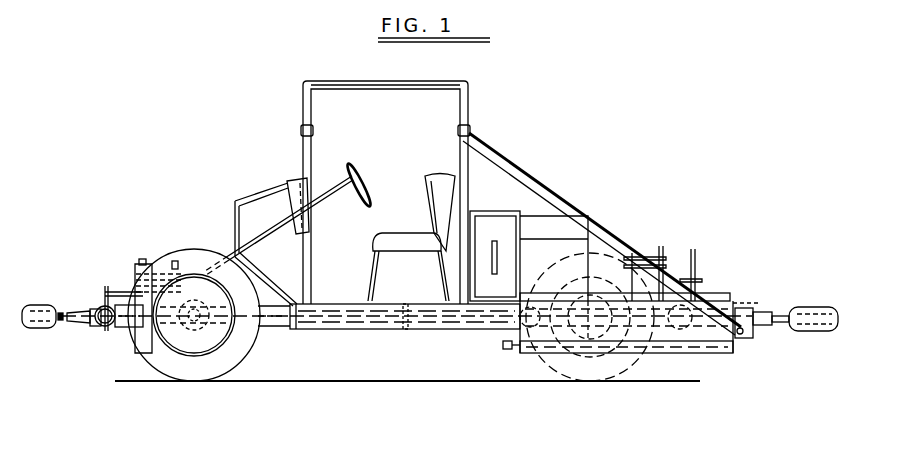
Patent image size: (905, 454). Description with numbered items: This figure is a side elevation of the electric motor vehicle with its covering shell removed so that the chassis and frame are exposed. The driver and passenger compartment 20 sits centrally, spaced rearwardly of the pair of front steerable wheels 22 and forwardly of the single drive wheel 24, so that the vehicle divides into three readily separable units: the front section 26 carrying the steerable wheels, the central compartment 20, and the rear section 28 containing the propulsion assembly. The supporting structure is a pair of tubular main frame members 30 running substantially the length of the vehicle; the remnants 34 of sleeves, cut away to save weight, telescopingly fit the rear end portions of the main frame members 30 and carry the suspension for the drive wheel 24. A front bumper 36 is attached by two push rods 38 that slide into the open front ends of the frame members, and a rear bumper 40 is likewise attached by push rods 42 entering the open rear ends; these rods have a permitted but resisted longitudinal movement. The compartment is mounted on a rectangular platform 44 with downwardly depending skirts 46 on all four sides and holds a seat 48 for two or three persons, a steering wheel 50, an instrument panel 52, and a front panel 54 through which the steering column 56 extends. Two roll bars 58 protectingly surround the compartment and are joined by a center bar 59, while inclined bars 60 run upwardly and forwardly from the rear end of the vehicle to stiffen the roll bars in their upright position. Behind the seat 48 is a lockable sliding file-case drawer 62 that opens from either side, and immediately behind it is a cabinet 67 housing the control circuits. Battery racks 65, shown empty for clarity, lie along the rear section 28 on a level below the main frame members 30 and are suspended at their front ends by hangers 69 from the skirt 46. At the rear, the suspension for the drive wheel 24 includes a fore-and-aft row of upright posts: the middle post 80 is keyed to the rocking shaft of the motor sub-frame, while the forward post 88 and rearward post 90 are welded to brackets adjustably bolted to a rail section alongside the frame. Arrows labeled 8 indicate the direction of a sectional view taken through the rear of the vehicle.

The direction arrow 8 is at (510, 298).
The driver and passenger compartment 20 is at (356, 78).
The front steerable wheels 22 is at (194, 370).
The drive wheel 24 is at (600, 368).
The front section 26 is at (159, 250).
The rear section 28 is at (652, 227).
The main frame members 30 is at (762, 326).
The remnants of sleeves 34 is at (743, 304).
The front bumper 36 is at (42, 300).
The push rods 38 is at (60, 325).
The rear bumper 40 is at (815, 305).
The push rods 42 is at (779, 323).
The platform 44 is at (348, 291).
The skirts 46 is at (357, 331).
The seat 48 is at (395, 233).
The steering wheel 50 is at (356, 181).
The instrument panel 52 is at (313, 187).
The front panel 54 is at (236, 222).
The steering column 56 is at (284, 226).
The roll bars 58 is at (302, 103).
The center bar 59 is at (423, 74).
The inclined bars 60 is at (518, 182).
The sliding file-case drawer 62 is at (486, 215).
The battery racks 65 is at (647, 347).
The cabinet 67 is at (553, 230).
The hangers 69 is at (500, 338).
The upright post 80 is at (667, 253).
The forward post 88 is at (630, 250).
The rearward post 90 is at (697, 258).